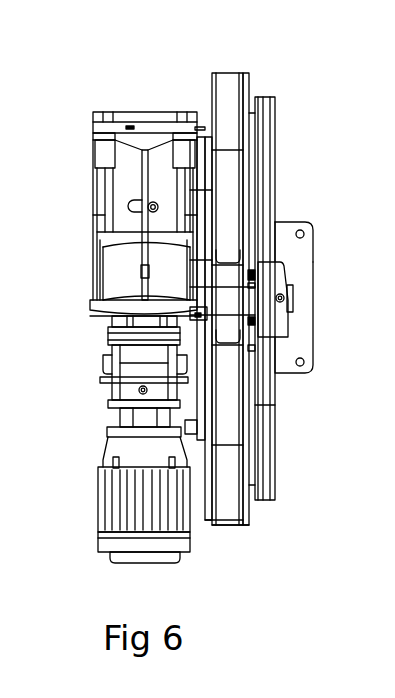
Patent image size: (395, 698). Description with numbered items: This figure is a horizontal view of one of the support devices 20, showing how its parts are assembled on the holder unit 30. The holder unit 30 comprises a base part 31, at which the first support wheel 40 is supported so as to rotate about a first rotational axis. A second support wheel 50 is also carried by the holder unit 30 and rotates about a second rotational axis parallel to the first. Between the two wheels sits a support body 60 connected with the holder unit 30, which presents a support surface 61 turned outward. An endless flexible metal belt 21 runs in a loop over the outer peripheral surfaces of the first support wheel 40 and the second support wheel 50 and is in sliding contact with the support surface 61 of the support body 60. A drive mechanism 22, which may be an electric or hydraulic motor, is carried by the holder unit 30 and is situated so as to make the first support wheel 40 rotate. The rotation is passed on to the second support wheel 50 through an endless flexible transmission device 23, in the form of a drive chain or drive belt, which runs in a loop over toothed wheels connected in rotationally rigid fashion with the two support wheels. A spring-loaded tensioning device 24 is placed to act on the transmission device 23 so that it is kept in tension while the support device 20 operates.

The support device 20 is at (130, 76).
The endless flexible metal belt 21 is at (228, 80).
The first support wheel 40 is at (247, 86).
The endless flexible transmission device 23 is at (267, 122).
The base part 31 is at (283, 228).
The support surface 61 is at (245, 268).
The holder unit 30 is at (323, 270).
The tensioning device 24 is at (277, 317).
The support body 60 is at (245, 341).
The second support wheel 50 is at (245, 510).
The drive mechanism 22 is at (178, 548).